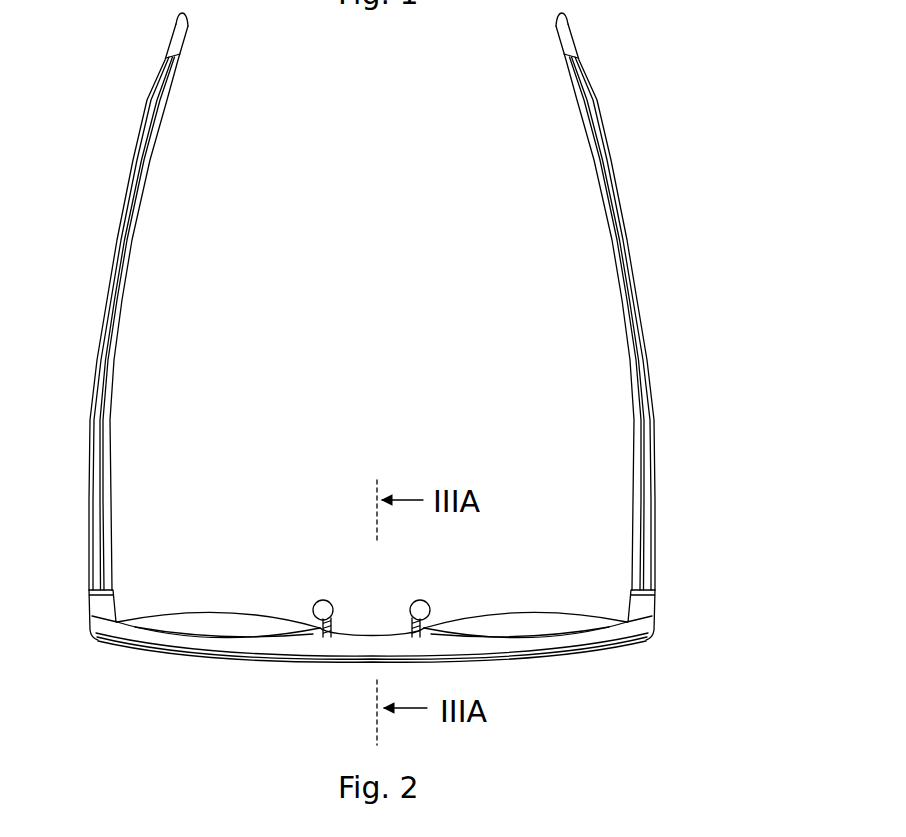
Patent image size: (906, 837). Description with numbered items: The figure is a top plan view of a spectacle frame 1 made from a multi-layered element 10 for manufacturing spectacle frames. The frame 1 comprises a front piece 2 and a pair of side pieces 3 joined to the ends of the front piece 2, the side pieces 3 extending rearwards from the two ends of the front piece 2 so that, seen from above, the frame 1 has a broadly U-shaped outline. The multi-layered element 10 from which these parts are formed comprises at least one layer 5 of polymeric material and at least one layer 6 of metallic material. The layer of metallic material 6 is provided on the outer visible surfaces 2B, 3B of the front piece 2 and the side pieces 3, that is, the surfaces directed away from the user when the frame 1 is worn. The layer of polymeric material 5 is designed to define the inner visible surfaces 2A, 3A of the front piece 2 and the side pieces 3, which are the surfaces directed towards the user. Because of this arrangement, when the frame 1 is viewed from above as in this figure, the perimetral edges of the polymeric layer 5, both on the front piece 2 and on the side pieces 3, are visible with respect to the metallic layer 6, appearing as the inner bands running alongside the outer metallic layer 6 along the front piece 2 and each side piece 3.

The spectacle frame 1 is at (708, 52).
The front piece 2 is at (393, 644).
The inner visible surface of the front piece 2A is at (383, 637).
The outer visible surface of the front piece 2B is at (465, 663).
The side pieces 3 is at (373, 366).
The inner visible surface of the side pieces 3A is at (118, 327).
The outer visible surface of the side pieces 3B is at (103, 306).
The layer of polymeric material 5 is at (110, 418).
The layer of metallic material 6 is at (90, 527).
The multi-layered element 10 is at (203, 185).